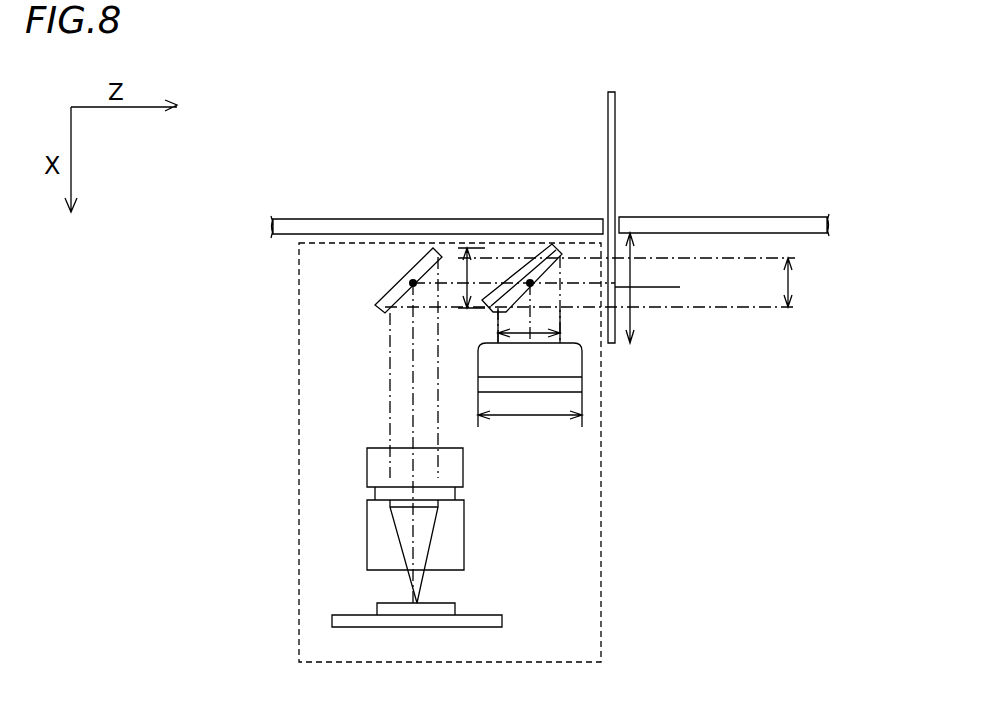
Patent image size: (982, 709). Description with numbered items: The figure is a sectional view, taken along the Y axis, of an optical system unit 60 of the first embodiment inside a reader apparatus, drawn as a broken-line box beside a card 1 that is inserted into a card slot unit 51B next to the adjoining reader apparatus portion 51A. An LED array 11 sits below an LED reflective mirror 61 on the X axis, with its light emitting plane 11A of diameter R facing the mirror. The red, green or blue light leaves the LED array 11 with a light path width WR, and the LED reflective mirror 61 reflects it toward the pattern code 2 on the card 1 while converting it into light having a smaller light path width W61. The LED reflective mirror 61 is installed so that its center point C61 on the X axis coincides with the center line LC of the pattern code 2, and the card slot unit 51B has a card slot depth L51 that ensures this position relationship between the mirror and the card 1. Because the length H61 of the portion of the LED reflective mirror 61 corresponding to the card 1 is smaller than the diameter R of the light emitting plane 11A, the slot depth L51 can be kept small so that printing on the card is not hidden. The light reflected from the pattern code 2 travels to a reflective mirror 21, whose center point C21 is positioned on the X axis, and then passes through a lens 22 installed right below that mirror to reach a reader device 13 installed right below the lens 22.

The card 1 is at (607, 108).
The pattern code 2 is at (680, 287).
The LED array 11 is at (582, 383).
The light emitting plane 11A is at (543, 347).
The reader device 13 is at (332, 620).
The reflective mirror 21 is at (385, 298).
The lens 22 is at (367, 470).
The reader apparatus portion 51A is at (735, 217).
The card slot unit 51B is at (619, 218).
The optical system unit 60 is at (603, 567).
The LED reflective mirror 61 is at (517, 287).
The center point of reflective mirror C21 is at (413, 283).
The center point of LED reflective mirror C61 is at (530, 283).
The length of LED reflective mirror portion H61 is at (465, 283).
The center line of pattern code LC is at (616, 283).
The card slot depth L51 is at (633, 321).
The light path width WR is at (540, 332).
The light path width W61 is at (813, 282).
The diameter of light emitting plane R is at (530, 428).